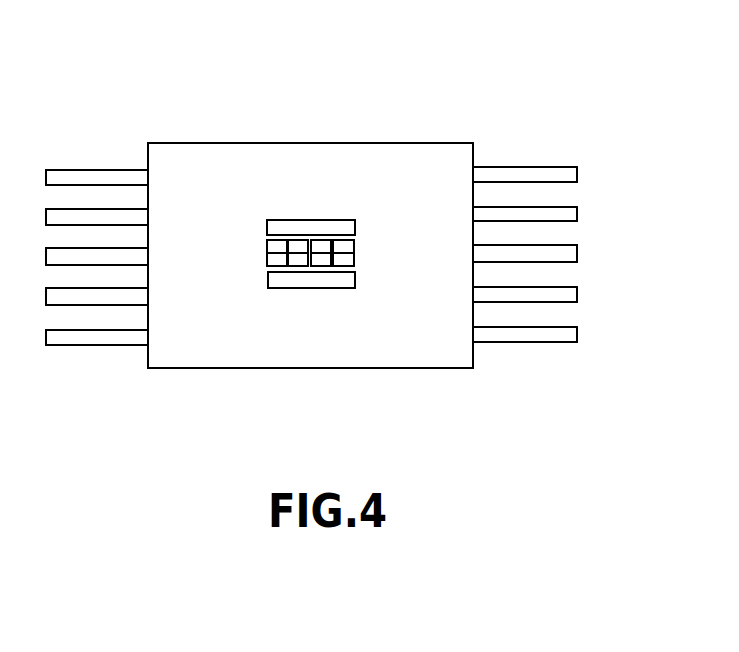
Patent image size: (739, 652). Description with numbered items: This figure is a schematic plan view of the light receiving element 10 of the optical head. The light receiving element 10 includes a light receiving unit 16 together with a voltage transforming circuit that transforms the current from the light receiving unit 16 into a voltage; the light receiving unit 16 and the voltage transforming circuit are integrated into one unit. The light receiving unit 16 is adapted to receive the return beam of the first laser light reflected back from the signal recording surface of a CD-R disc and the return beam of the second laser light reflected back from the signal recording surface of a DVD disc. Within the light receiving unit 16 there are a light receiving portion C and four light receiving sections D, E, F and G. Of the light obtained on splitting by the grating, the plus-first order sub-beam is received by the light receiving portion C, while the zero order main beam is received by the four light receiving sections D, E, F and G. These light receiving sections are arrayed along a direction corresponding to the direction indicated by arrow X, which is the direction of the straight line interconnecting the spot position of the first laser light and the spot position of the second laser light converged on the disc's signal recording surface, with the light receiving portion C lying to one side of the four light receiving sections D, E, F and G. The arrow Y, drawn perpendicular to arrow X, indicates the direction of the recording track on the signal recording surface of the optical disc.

The light receiving element 10 is at (140, 97).
The light receiving unit 16 is at (404, 189).
The light receiving portion C is at (283, 220).
The light receiving section D is at (267, 255).
The light receiving section E is at (298, 266).
The light receiving section F is at (322, 240).
The light receiving section G is at (343, 240).
The direction X is at (246, 48).
The direction Y is at (614, 211).